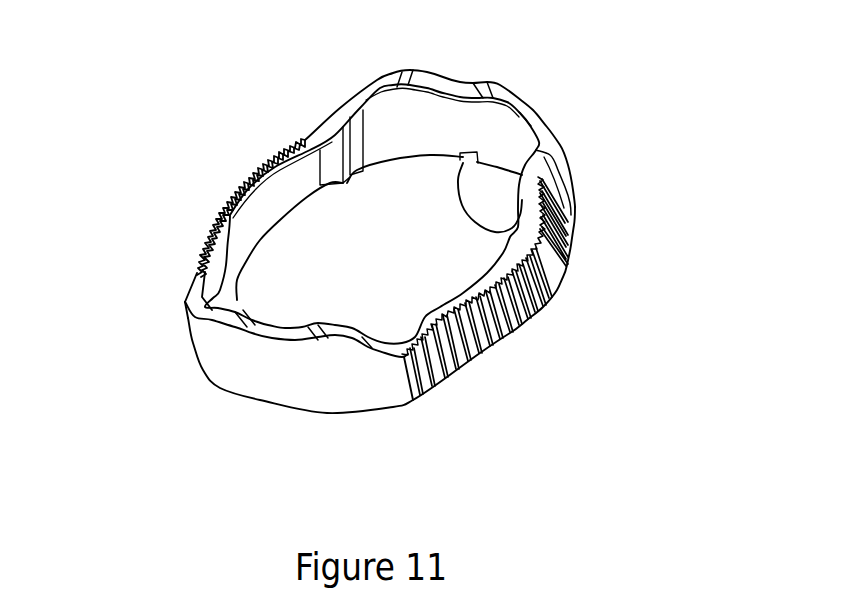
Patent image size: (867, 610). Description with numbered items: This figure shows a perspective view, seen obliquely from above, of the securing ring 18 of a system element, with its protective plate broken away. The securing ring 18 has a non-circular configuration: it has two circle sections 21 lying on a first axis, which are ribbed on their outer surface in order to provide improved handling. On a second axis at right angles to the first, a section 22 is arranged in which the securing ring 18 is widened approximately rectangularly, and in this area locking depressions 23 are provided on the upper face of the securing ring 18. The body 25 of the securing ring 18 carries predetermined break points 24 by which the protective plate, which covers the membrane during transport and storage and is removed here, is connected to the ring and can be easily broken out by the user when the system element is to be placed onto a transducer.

The securing ring 18 is at (212, 127).
The circle sections 21 is at (560, 273).
The section 22 is at (351, 390).
The locking depressions 23 is at (457, 82).
The predetermined break points 24 is at (565, 227).
The body 25 is at (213, 247).